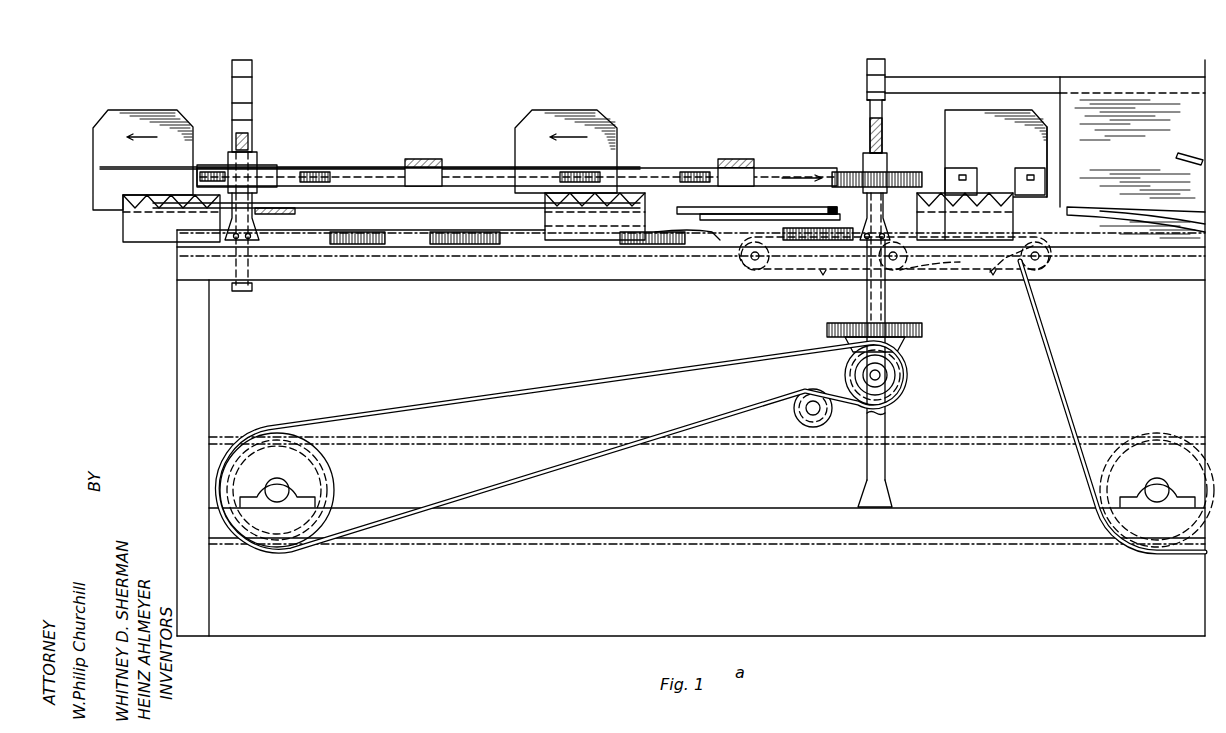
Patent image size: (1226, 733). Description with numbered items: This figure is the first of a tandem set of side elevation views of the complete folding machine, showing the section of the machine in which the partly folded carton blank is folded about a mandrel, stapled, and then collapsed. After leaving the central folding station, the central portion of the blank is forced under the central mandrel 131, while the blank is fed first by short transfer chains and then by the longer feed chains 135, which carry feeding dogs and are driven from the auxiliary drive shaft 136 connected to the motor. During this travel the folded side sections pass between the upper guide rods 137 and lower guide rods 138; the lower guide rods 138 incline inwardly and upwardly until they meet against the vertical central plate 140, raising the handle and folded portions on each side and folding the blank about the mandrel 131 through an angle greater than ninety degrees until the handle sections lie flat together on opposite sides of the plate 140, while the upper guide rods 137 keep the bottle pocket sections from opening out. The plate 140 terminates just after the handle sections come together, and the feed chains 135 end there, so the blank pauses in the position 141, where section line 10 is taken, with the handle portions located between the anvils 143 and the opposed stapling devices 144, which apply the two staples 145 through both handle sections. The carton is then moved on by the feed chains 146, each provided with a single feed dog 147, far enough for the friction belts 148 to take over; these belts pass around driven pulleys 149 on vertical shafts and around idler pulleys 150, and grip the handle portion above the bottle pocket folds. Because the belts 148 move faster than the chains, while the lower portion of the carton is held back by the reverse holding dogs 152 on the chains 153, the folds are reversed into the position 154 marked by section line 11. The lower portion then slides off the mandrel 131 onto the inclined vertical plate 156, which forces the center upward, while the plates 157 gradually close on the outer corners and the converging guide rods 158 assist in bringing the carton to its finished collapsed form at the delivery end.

The section line 10- 10 is at (1000, 80).
The section line 11- 11 is at (584, 100).
The central mandrel 131 is at (747, 218).
The feed chains 135 is at (1052, 362).
The auxiliary drive shaft 136 is at (1157, 488).
The upper guide rods 137 is at (1190, 156).
The lower guide rods 138 is at (1082, 207).
The vertical central plate 140 is at (1130, 100).
The blank position 141 is at (963, 124).
The anvils 143 is at (963, 168).
The stapling devices 144 is at (1040, 170).
The staples 145 is at (1033, 167).
The feed chains 146 is at (957, 263).
The feed dog 147 is at (993, 275).
The friction belts 148 is at (357, 177).
The driven pulleys 149 is at (842, 172).
The idler pulleys 150 is at (275, 170).
The holding dogs 152 is at (822, 275).
The chains 153 is at (780, 262).
The inclined vertical plate 156 is at (710, 235).
The plates 157 is at (453, 243).
The converging guide rods 158 is at (345, 210).
The carton position 154 is at (602, 122).